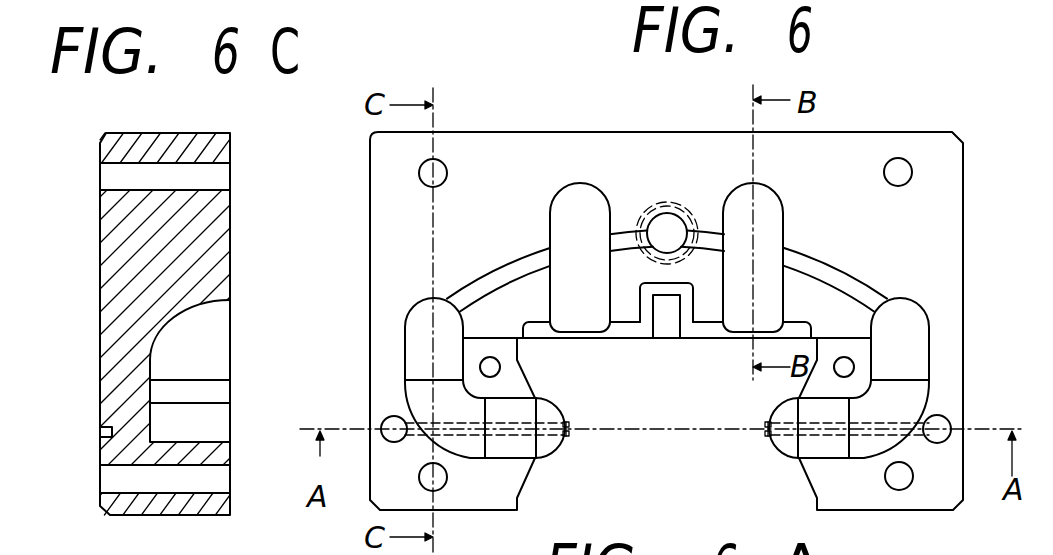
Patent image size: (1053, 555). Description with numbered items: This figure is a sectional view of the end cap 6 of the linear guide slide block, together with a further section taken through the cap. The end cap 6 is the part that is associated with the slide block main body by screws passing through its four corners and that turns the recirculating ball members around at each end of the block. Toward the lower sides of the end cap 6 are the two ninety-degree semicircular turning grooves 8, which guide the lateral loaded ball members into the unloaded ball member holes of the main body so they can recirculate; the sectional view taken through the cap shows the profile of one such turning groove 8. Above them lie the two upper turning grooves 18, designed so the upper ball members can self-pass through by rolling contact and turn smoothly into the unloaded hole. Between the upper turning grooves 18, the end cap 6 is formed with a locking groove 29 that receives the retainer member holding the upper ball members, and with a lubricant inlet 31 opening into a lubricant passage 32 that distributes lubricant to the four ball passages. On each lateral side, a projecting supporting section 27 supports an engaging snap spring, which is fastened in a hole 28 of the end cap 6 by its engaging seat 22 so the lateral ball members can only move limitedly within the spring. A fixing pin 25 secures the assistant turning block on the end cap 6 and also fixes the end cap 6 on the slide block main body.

In FIG. 6, the end cap 6 is at (948, 183).
In FIG. 6C, the semicircular turning groove 8 is at (163, 332).
In FIG. 6, the semicircular turning groove 8 is at (405, 362).
In FIG. 6, the upper turning groove 18 is at (768, 190).
In FIG. 6, the engaging seat 22 is at (867, 427).
In FIG. 6, the fixing pin 25 is at (853, 356).
In FIG. 6, the projecting supporting section 27 is at (572, 432).
In FIG. 6, the hole 28 is at (381, 426).
In FIG. 6, the locking groove 29 is at (650, 283).
In FIG. 6, the lubricant inlet 31 is at (672, 202).
In FIG. 6, the lubricant passage 32 is at (850, 272).